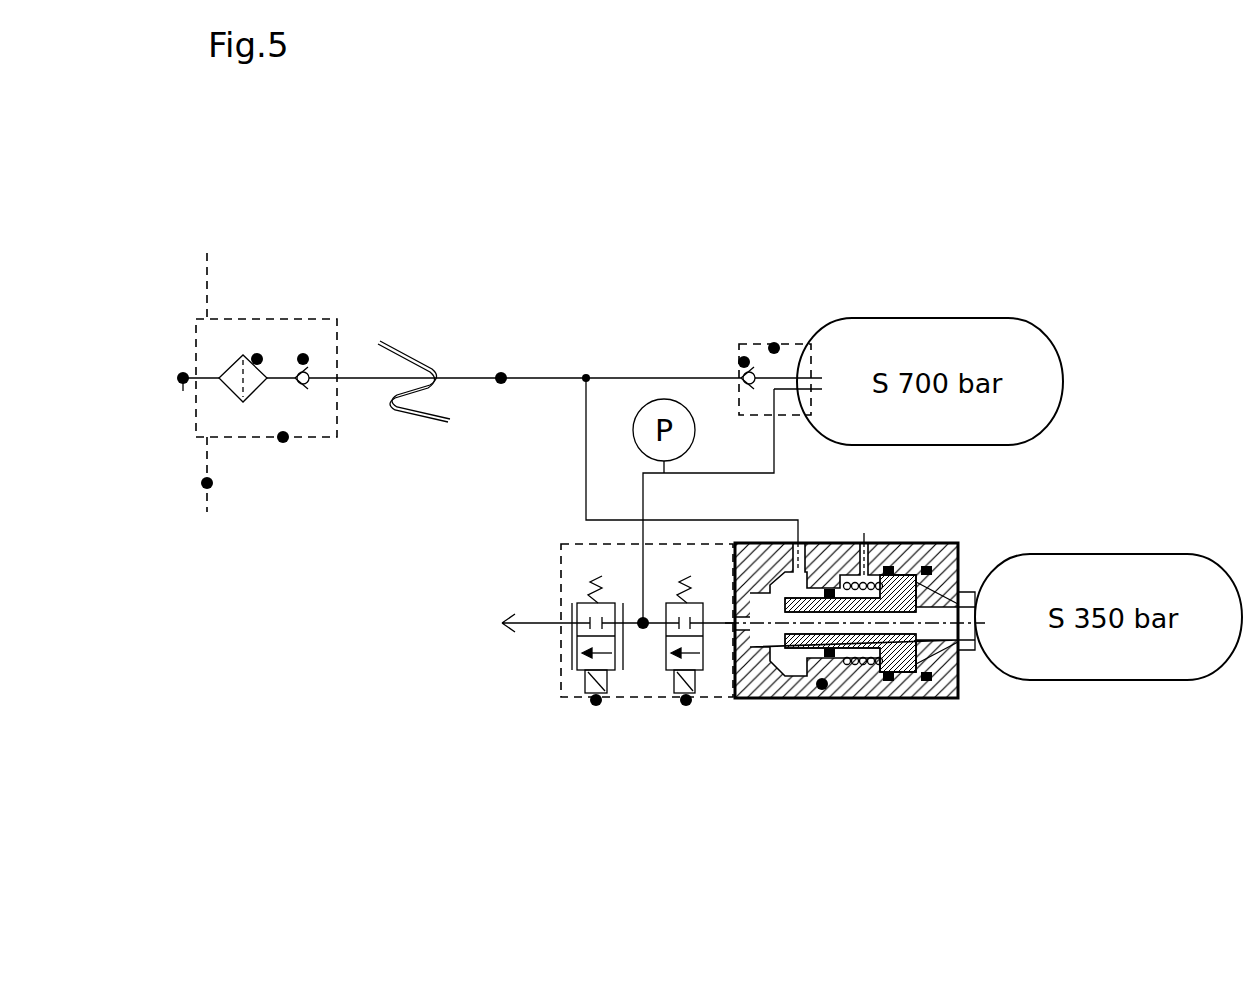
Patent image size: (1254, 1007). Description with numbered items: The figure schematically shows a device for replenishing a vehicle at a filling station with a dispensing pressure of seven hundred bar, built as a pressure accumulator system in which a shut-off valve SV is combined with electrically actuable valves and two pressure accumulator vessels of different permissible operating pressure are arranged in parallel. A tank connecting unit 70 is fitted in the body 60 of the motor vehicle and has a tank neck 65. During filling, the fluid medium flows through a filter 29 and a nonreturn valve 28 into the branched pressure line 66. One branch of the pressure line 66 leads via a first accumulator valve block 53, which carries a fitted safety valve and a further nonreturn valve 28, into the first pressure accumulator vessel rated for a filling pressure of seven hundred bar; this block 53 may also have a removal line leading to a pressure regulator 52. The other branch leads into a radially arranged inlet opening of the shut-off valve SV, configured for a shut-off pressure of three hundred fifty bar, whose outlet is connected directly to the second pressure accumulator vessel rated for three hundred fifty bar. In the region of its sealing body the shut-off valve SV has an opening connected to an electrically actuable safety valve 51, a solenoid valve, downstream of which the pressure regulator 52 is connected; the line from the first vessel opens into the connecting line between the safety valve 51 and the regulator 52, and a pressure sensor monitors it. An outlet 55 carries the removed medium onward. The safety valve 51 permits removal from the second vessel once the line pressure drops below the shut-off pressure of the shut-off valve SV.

The tank neck 65 is at (183, 367).
The body 60 is at (207, 483).
The tank connecting unit 70 is at (283, 437).
The filter 29 is at (257, 359).
The nonreturn valve 28 is at (303, 359).
The first accumulator valve block 53 is at (774, 345).
The branched pressure line 66 is at (501, 383).
The return line 55 is at (510, 625).
The pressure regulator 52 is at (596, 700).
The electrically actuable safety valve 51 is at (686, 700).
The shut-off valve SV is at (822, 684).